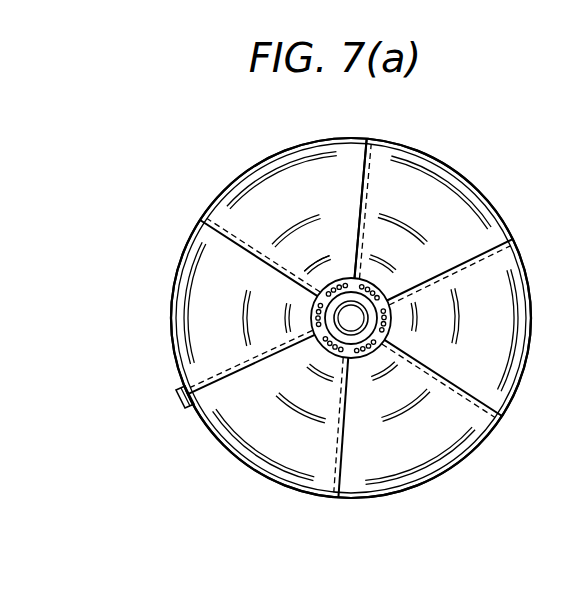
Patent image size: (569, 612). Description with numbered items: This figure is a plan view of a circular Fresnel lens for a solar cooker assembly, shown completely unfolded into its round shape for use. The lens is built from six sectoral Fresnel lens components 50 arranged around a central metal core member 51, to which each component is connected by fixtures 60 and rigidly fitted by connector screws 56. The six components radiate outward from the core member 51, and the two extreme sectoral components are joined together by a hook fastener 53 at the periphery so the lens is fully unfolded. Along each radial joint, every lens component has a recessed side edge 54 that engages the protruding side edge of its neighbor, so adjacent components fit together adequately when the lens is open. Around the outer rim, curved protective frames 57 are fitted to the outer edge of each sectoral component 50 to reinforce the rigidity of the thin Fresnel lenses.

The sectoral Fresnel lens component 50 is at (403, 443).
The core member 51 is at (372, 298).
The hook fastener 53 is at (177, 395).
The recessed side edge 54 is at (366, 142).
The connector screw 56 is at (333, 277).
The curved protective frame 57 is at (467, 452).
The fixture 60 is at (348, 320).